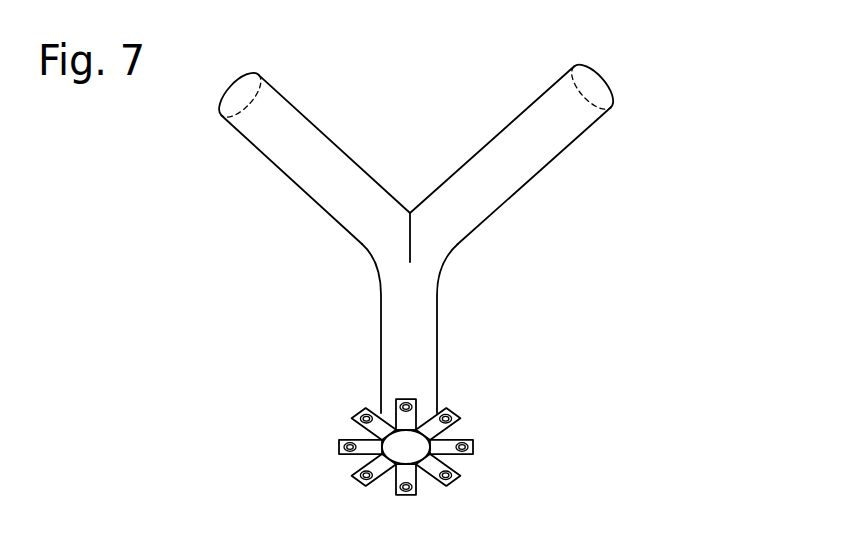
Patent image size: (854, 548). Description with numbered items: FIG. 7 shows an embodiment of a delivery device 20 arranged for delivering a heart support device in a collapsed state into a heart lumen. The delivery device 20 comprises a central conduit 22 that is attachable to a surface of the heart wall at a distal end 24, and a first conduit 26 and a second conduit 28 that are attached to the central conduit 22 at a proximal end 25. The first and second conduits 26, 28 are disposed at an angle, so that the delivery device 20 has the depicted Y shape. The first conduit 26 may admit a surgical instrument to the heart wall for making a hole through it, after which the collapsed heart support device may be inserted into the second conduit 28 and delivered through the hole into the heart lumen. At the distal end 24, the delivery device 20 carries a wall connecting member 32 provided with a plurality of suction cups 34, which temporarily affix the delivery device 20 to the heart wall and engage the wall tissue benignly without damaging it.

The delivery device 20 is at (637, 63).
The central conduit 22 is at (416, 451).
The distal end 24 is at (393, 355).
The proximal end 25 is at (295, 158).
The first conduit 26 is at (230, 89).
The second conduit 28 is at (588, 76).
The wall connecting member 32 is at (450, 443).
The suction cups 34 is at (367, 478).